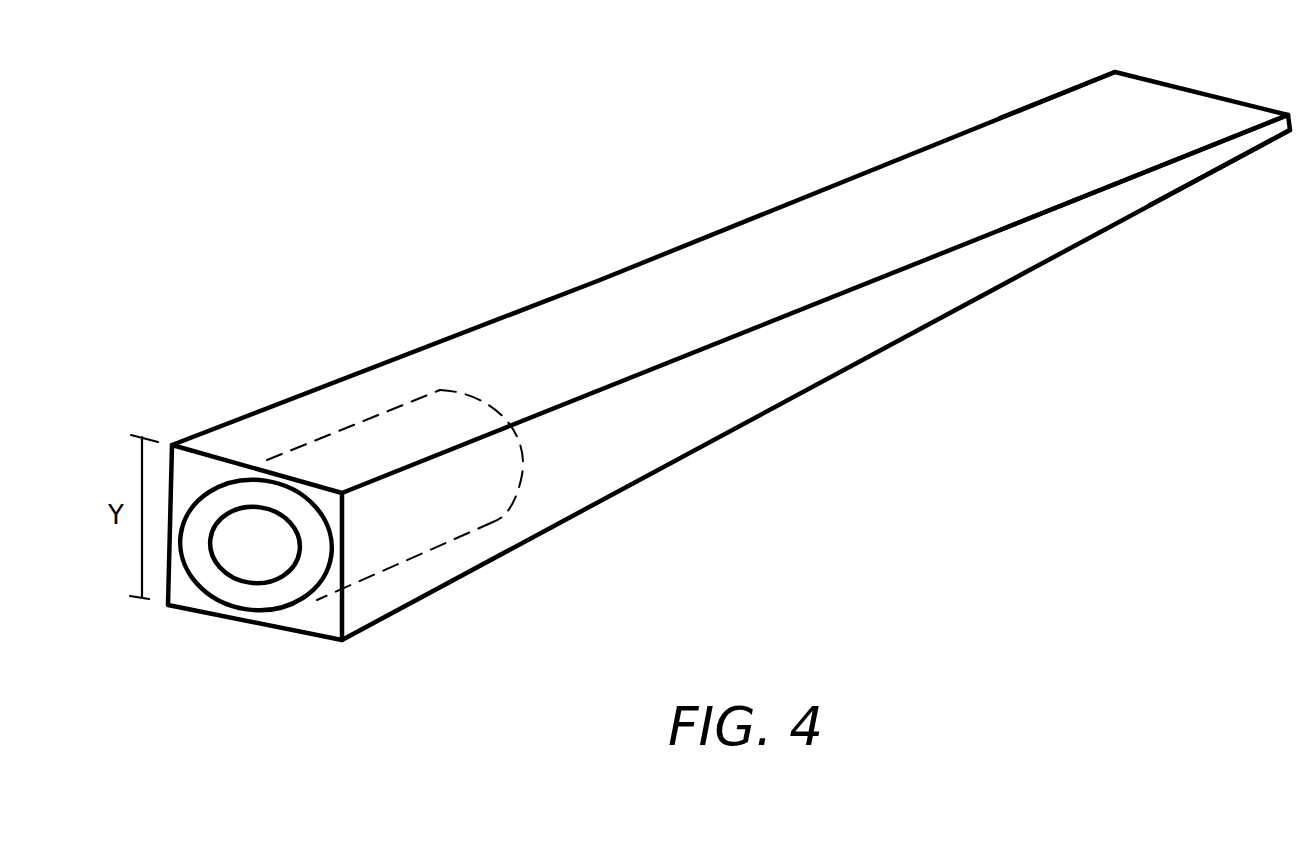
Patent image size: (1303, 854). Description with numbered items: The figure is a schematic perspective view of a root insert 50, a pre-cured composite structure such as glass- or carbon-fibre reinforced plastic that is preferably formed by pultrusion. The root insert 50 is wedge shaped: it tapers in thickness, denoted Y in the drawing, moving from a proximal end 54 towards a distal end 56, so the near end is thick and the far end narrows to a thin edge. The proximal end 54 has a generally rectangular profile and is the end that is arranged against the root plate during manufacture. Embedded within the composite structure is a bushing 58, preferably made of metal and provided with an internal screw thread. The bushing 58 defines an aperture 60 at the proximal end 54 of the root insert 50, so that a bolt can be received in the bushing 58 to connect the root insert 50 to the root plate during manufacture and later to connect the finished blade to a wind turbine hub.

The root insert 50 is at (466, 260).
The proximal end 54 is at (178, 424).
The distal end 56 is at (1095, 67).
The bushing 58 is at (273, 596).
The aperture 60 is at (244, 556).